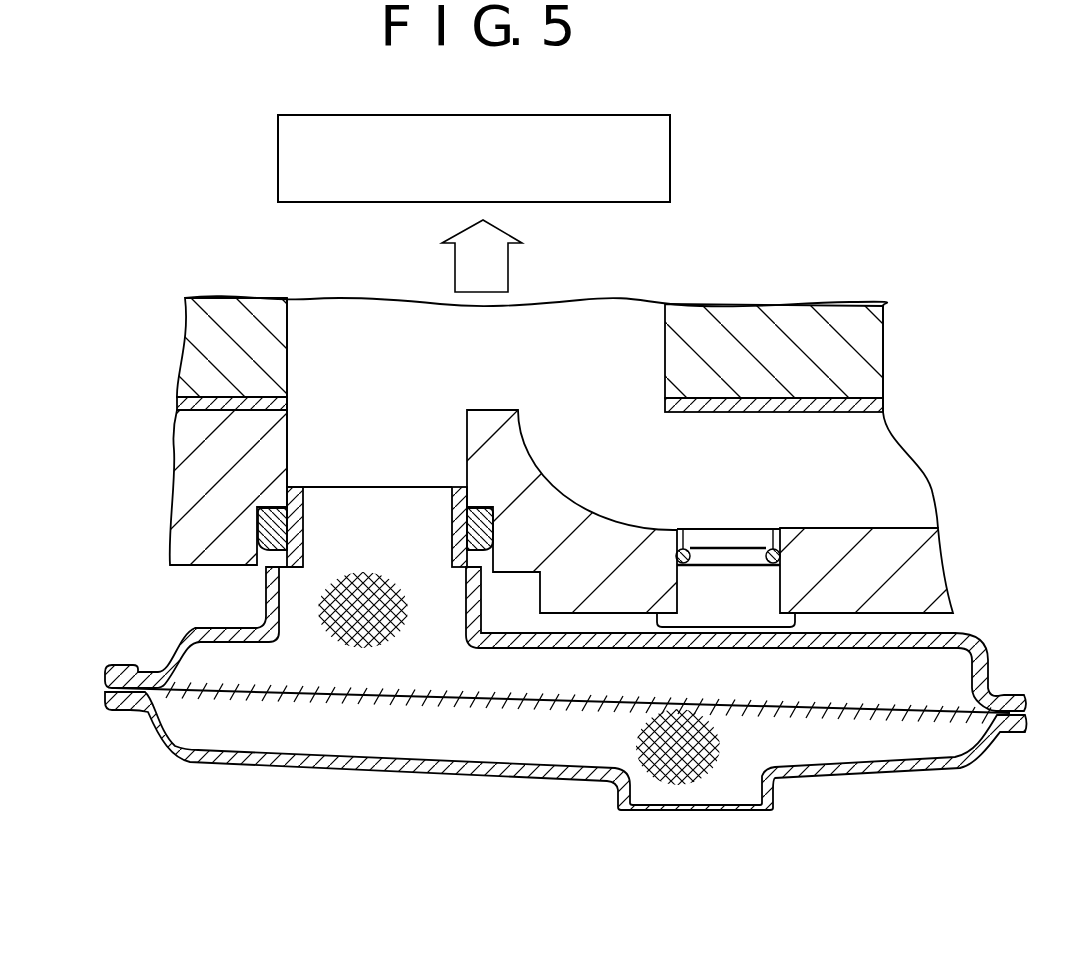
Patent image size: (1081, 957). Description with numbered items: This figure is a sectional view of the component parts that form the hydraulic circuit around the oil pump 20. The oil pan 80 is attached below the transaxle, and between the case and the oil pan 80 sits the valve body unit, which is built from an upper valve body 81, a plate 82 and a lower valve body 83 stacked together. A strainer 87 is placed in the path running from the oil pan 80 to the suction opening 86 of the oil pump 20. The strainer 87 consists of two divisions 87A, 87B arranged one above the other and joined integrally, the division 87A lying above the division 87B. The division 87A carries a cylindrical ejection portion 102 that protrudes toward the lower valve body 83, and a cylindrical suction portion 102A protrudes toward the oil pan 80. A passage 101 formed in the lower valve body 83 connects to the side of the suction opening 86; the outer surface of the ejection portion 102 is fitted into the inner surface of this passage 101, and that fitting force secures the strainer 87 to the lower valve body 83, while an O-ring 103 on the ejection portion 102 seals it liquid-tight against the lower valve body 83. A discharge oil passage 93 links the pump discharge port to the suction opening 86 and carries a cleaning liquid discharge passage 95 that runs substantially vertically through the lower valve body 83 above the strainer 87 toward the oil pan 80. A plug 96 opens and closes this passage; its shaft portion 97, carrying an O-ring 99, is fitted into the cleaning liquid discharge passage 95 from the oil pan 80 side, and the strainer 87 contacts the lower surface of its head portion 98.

The oil pump 20 is at (660, 178).
The oil pan 80 is at (683, 860).
The upper valve body 81 is at (271, 357).
The plate 82 is at (272, 403).
The lower valve body 83 is at (872, 557).
The suction opening 86 is at (500, 372).
The strainer 87 is at (577, 700).
The division 87A is at (958, 643).
The division 87B is at (421, 762).
The discharge oil passage 93 is at (733, 469).
The cleaning liquid discharge passage 95 is at (686, 576).
The plug 96 is at (790, 573).
The shaft portion 97 is at (768, 603).
The head portion 98 is at (705, 623).
The O-ring 99 is at (695, 548).
The passage 101 is at (289, 460).
The ejection portion 102 is at (468, 519).
The suction portion 102A is at (778, 788).
The O-ring 103 is at (265, 524).